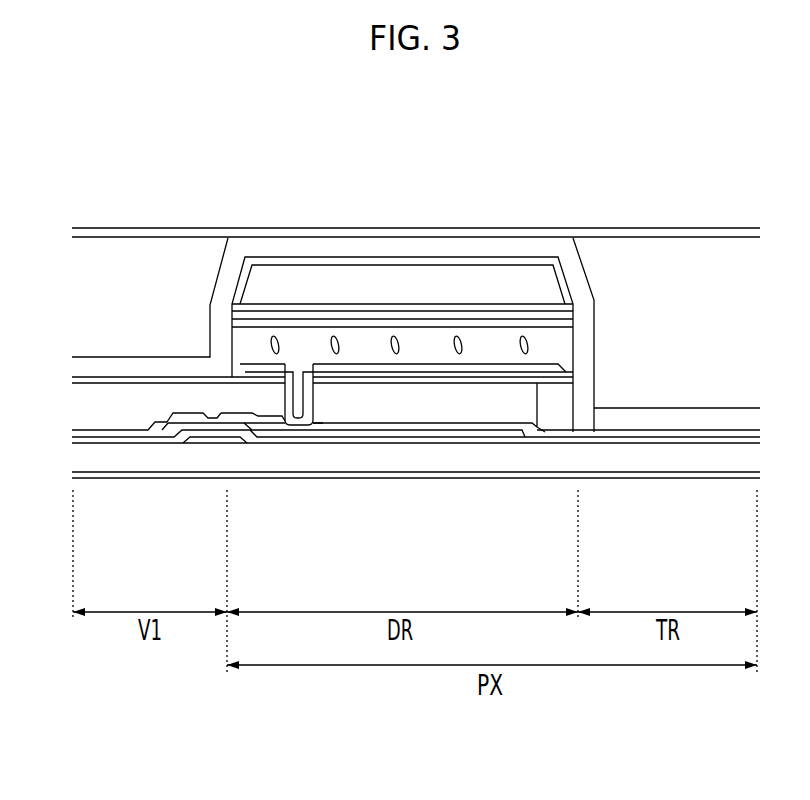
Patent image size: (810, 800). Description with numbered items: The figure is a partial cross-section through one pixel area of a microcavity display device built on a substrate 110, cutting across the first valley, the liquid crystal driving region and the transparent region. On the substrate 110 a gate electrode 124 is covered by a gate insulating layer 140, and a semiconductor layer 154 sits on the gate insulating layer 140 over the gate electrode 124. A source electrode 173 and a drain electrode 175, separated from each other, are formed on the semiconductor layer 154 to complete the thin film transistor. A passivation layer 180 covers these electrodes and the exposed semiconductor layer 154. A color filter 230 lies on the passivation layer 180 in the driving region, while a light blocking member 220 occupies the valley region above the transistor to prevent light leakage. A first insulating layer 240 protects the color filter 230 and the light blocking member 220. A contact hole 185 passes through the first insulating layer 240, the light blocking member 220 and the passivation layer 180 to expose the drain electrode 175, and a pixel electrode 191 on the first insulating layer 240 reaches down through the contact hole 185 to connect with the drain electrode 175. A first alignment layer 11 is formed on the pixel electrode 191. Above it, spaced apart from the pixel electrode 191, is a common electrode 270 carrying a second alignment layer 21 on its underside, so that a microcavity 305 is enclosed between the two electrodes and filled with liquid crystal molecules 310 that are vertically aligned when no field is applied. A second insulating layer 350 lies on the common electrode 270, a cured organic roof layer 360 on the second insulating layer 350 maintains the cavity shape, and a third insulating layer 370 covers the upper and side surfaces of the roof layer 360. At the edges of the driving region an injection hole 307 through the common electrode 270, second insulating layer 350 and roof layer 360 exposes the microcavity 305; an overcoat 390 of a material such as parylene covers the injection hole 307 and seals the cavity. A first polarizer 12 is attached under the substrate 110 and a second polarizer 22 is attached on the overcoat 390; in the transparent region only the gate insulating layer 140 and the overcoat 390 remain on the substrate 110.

The first alignment layer 11 is at (538, 370).
The first polarizer 12 is at (723, 478).
The second alignment layer 21 is at (542, 326).
The second polarizer 22 is at (661, 237).
The substrate 110 is at (677, 458).
The gate electrode 124 is at (206, 445).
The gate insulating layer 140 is at (615, 438).
The semiconductor layer 154 is at (243, 431).
The source electrode 173 is at (163, 428).
The drain electrode 175 is at (296, 427).
The passivation layer 180 is at (322, 423).
The contact hole 185 is at (300, 385).
The pixel electrode 191 is at (393, 378).
The light blocking member 220 is at (112, 410).
The color filter 230 is at (485, 410).
The first insulating layer 240 is at (433, 387).
The common electrode 270 is at (515, 318).
The microcavity 305 is at (367, 343).
The injection hole 307 is at (210, 342).
The liquid crystal molecules 310 is at (531, 343).
The second insulating layer 350 is at (487, 306).
The roof layer 360 is at (460, 283).
The third insulating layer 370 is at (417, 257).
The overcoat 390 is at (250, 243).